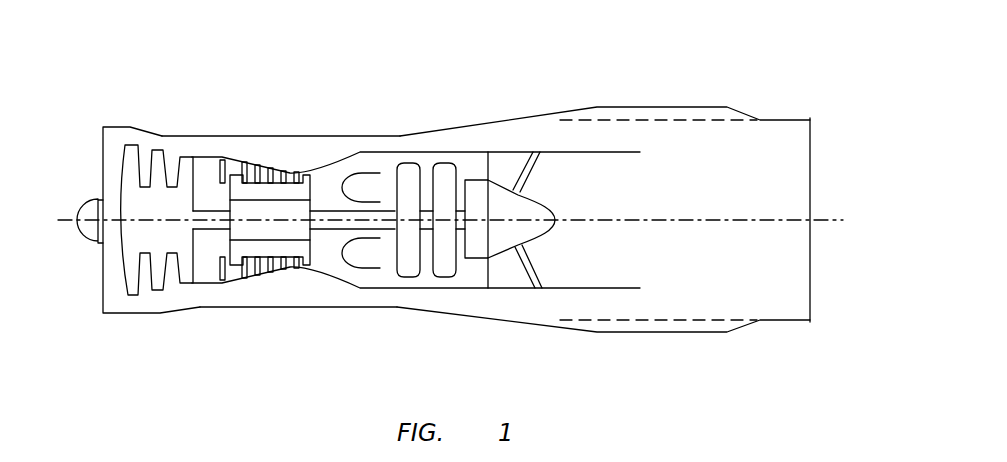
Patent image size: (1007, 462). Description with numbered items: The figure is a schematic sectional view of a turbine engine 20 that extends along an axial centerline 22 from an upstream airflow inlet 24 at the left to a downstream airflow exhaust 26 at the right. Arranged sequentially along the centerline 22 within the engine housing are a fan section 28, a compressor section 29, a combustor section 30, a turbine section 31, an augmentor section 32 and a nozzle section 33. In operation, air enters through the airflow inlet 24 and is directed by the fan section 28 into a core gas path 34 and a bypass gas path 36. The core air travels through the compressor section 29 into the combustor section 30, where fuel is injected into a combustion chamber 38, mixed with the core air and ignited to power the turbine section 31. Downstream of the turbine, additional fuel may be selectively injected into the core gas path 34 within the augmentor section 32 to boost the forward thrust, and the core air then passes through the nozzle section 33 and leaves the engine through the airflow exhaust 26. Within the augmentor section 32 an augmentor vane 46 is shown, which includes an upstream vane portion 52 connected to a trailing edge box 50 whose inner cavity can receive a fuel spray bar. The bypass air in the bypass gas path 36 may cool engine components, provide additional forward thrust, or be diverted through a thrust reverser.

The turbine engine 20 is at (110, 71).
The axial centerline 22 is at (830, 222).
The upstream airflow inlet 24 is at (103, 157).
The downstream airflow exhaust 26 is at (810, 143).
The fan section 28 is at (166, 145).
The compressor section 29 is at (266, 154).
The combustor section 30 is at (362, 154).
The turbine section 31 is at (431, 155).
The augmentor section 32 is at (515, 148).
The nozzle section 33 is at (668, 103).
The core gas path 34 is at (213, 267).
The bypass gas path 36 is at (258, 295).
The combustion chamber 38 is at (365, 257).
The augmentor vane 46 is at (507, 280).
The trailing edge box 50 is at (530, 267).
The upstream vane portion 52 is at (488, 278).